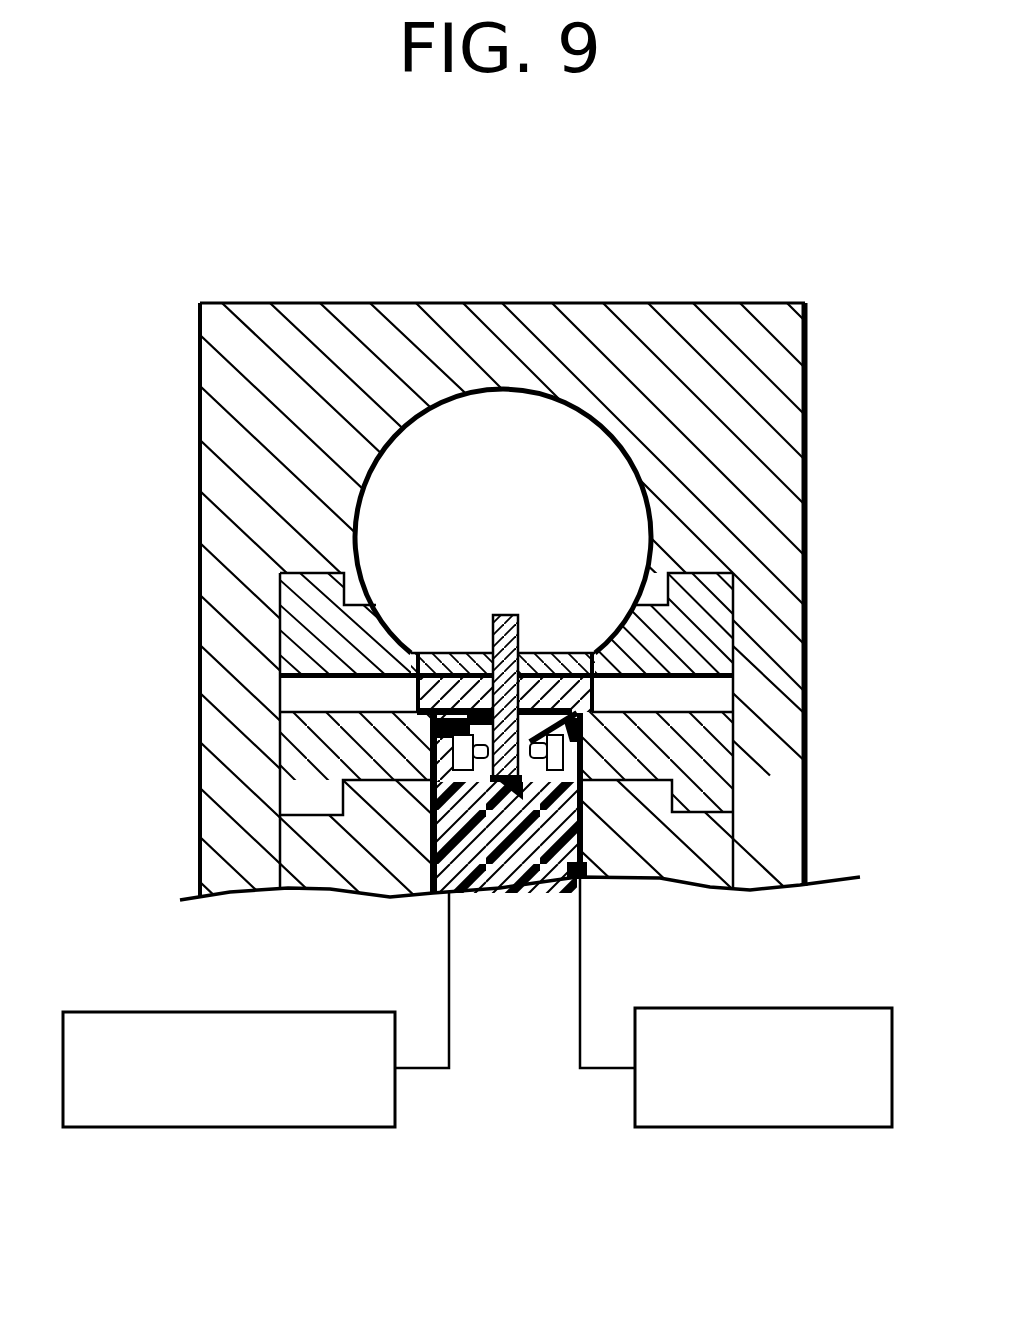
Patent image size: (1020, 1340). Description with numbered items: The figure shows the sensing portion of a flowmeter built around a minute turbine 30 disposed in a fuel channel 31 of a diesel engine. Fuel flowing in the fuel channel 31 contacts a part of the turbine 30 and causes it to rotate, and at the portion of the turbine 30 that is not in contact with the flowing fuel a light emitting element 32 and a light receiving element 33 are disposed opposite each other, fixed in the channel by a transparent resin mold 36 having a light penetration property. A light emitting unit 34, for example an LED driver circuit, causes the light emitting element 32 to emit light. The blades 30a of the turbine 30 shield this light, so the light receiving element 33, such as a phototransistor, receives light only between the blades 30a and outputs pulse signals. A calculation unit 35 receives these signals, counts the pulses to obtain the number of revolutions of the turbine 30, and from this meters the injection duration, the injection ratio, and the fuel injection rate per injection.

The minute turbine 30 is at (580, 650).
The blade 30a is at (518, 614).
The fuel channel 31 is at (494, 323).
The light emitting element 32 is at (472, 770).
The light receiving element 33 is at (580, 877).
The light emitting unit 34 is at (175, 1127).
The calculation unit 35 is at (717, 1127).
The transparent resin mold 36 is at (522, 877).